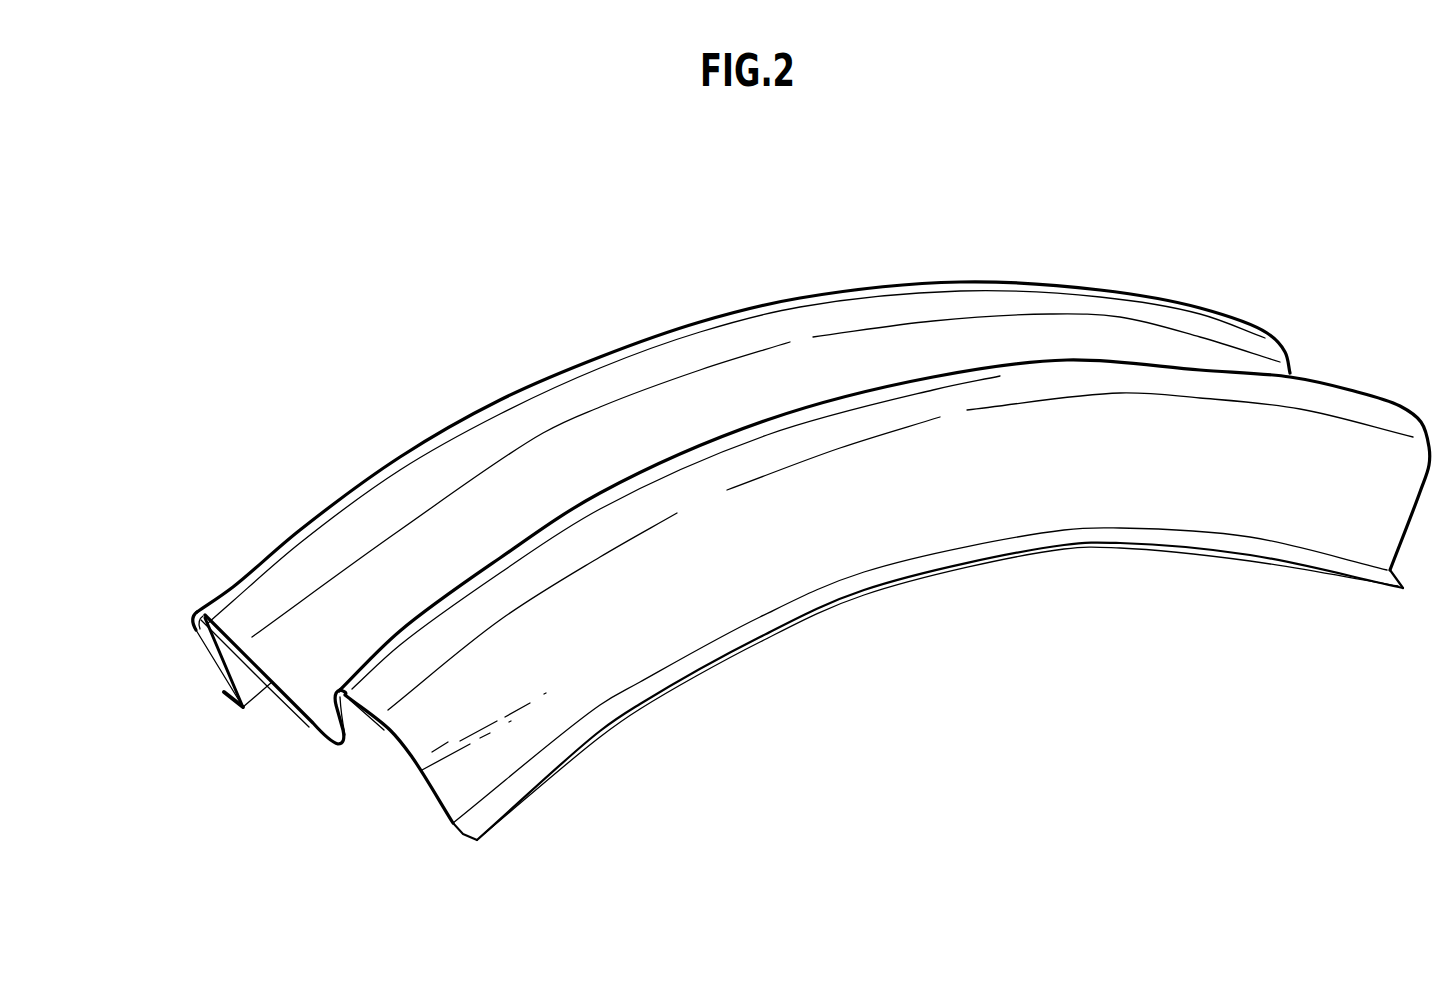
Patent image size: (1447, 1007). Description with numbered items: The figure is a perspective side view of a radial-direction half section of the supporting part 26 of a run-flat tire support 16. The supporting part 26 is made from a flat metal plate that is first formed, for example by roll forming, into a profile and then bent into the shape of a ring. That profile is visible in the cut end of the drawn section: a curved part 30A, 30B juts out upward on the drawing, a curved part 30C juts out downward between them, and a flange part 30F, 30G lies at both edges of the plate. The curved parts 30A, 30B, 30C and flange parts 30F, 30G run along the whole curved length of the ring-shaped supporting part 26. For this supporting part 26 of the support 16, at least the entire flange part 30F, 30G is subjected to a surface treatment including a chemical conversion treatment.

The support 16 is at (378, 442).
The supporting part 26 is at (640, 647).
The curved part 30A is at (197, 641).
The curved part 30B is at (348, 722).
The curved part 30C is at (322, 736).
The flange part 30F is at (218, 687).
The flange part 30G is at (488, 807).